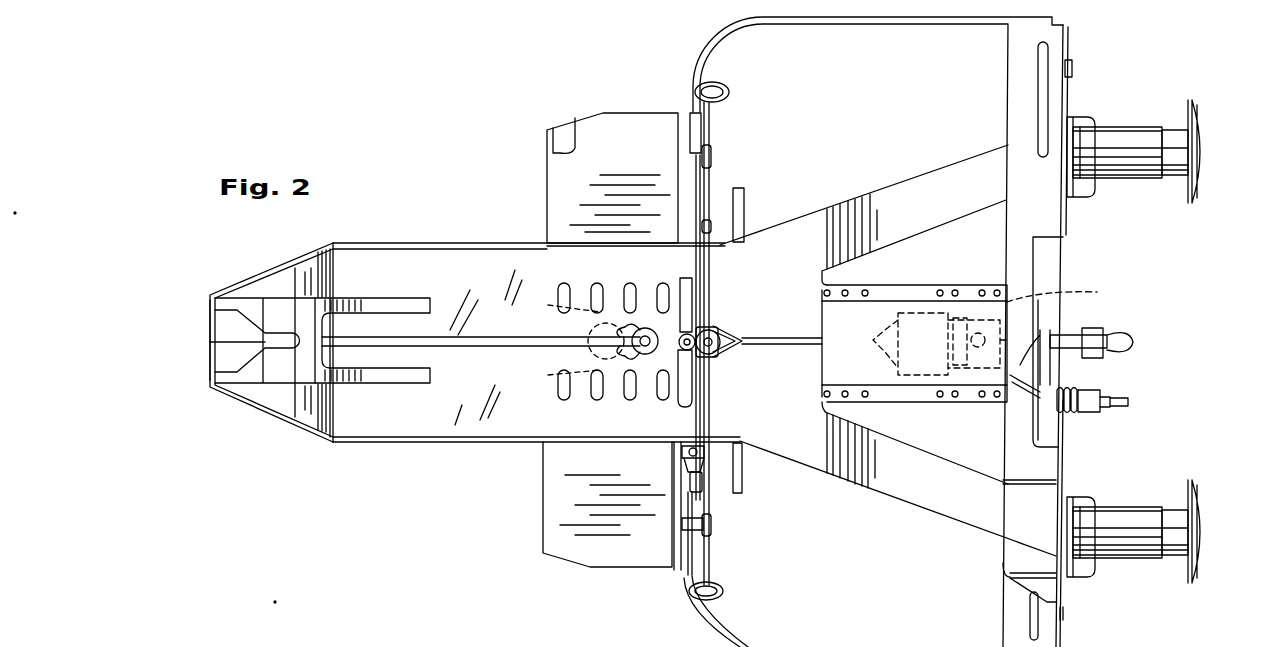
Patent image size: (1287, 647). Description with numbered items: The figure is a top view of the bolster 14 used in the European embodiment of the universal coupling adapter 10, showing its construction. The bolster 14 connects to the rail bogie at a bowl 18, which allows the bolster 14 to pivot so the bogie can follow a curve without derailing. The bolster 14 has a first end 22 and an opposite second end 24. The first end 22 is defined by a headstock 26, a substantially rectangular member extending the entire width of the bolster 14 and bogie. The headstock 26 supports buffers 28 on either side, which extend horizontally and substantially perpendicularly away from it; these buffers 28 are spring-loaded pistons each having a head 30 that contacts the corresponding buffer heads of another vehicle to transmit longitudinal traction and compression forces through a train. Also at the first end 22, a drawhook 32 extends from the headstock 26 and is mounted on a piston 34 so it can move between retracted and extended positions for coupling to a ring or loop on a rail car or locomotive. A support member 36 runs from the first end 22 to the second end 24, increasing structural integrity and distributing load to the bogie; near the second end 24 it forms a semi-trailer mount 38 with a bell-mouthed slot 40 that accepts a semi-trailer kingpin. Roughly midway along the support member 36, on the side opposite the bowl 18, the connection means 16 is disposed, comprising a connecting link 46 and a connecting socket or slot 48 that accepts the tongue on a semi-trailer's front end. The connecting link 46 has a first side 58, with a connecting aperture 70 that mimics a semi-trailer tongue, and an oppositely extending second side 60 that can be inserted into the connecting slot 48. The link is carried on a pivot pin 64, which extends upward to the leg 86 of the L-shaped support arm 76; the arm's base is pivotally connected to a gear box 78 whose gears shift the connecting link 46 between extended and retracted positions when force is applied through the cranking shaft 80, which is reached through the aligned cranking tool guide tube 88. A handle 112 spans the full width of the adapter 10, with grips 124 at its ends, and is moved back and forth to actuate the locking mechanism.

The universal coupling adapter 10 is at (478, 119).
The bolster 14 is at (575, 567).
The connection means 16 is at (745, 300).
The bowl 18 is at (570, 322).
The first end 22 is at (975, 520).
The second end 24 is at (370, 444).
The headstock 26 is at (1065, 468).
The buffers 28 is at (1118, 180).
The head 30 is at (1207, 143).
The drawhook 32 is at (1128, 336).
The piston 34 is at (974, 341).
The support member 36 is at (506, 443).
The semi-trailer mount 38 is at (248, 385).
The bell-mouthed slot 40 is at (230, 322).
The connecting link 46 is at (672, 290).
The connecting socket or slot 48 is at (738, 288).
The first side 58 is at (607, 442).
The second side 60 is at (733, 322).
The pivot pin 64 is at (648, 354).
The connecting aperture 70 is at (640, 328).
The support arm 76 is at (696, 418).
The gear box 78 is at (705, 472).
The cranking shaft 80 is at (712, 492).
The leg 86 is at (668, 442).
The cranking tool guide or tube 88 is at (685, 560).
The handle 112 is at (715, 133).
The grips 124 is at (727, 80).